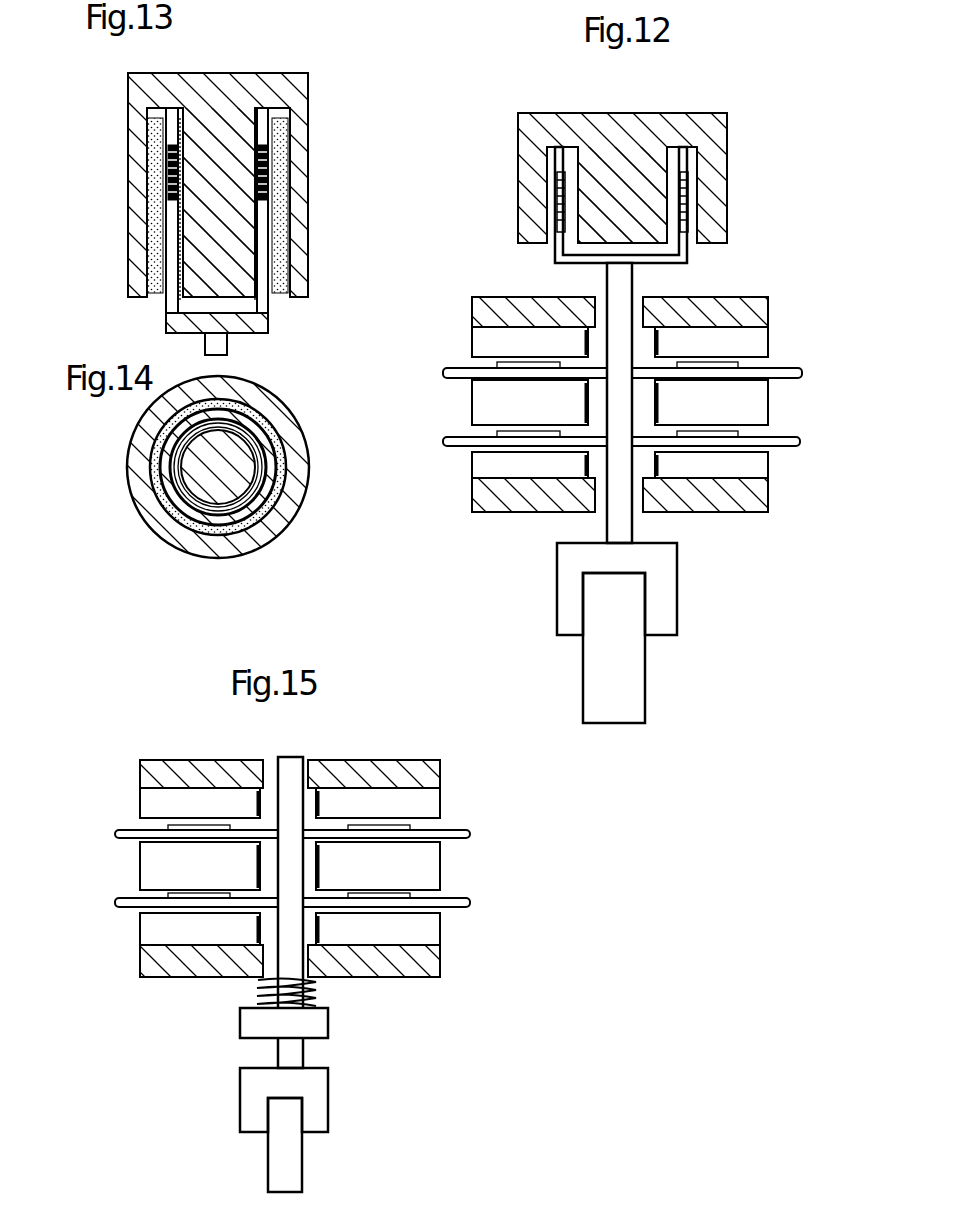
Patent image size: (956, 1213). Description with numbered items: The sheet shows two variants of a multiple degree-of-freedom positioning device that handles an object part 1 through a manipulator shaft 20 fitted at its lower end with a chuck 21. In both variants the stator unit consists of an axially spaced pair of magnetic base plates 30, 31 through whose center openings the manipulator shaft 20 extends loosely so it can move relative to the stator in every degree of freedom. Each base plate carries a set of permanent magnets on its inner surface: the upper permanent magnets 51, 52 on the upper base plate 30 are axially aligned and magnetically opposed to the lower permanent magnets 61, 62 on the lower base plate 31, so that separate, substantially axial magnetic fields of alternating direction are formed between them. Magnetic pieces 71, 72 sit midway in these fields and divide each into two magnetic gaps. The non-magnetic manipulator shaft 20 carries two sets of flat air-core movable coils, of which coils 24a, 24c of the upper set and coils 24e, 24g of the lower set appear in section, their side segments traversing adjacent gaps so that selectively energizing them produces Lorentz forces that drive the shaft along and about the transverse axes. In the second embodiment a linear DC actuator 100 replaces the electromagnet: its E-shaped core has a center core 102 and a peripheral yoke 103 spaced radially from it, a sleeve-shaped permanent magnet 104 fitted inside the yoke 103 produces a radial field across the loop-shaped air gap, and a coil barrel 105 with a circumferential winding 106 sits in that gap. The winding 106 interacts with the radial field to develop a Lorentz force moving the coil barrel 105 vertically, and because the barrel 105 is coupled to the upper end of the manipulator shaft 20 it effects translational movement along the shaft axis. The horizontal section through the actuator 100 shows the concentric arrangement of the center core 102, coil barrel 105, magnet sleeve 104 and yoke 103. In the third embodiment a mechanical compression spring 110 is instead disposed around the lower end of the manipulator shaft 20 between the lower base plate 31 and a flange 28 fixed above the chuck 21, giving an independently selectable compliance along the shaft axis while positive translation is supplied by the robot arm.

In FIG. 12, the object part 1 is at (630, 690).
In FIG. 15, the object part 1 is at (290, 1168).
In FIG. 13, the manipulator shaft 20 is at (227, 346).
In FIG. 12, the manipulator shaft 20 is at (613, 292).
In FIG. 15, the manipulator shaft 20 is at (290, 782).
In FIG. 12, the chuck 21 is at (667, 618).
In FIG. 15, the chuck 21 is at (318, 1107).
In FIG. 12, the movable coil 24a is at (445, 371).
In FIG. 15, the movable coil 24a is at (120, 834).
In FIG. 12, the movable coil 24c is at (828, 359).
In FIG. 15, the movable coil 24c is at (472, 834).
In FIG. 12, the movable coil 24e is at (447, 442).
In FIG. 15, the movable coil 24e is at (122, 904).
In FIG. 12, the movable coil 24g is at (790, 446).
In FIG. 15, the movable coil 24g is at (472, 903).
In FIG. 15, the flange 28 is at (250, 1028).
In FIG. 12, the upper base plate 30 is at (759, 298).
In FIG. 15, the upper base plate 30 is at (440, 765).
In FIG. 12, the lower base plate 31 is at (762, 498).
In FIG. 15, the lower base plate 31 is at (433, 965).
In FIG. 12, the permanent magnet 51 is at (484, 338).
In FIG. 15, the permanent magnet 51 is at (152, 803).
In FIG. 12, the permanent magnet 52 is at (751, 340).
In FIG. 15, the permanent magnet 52 is at (433, 800).
In FIG. 12, the permanent magnet 61 is at (483, 463).
In FIG. 15, the permanent magnet 61 is at (147, 930).
In FIG. 12, the permanent magnet 62 is at (760, 470).
In FIG. 15, the permanent magnet 62 is at (437, 934).
In FIG. 12, the magnetic piece 71 is at (480, 403).
In FIG. 15, the magnetic piece 71 is at (152, 862).
In FIG. 12, the magnetic piece 72 is at (758, 408).
In FIG. 15, the magnetic piece 72 is at (433, 860).
In FIG. 13, the linear DC actuator 100 is at (310, 72).
In FIG. 12, the linear DC actuator 100 is at (730, 112).
In FIG. 13, the center core 102 is at (208, 178).
In FIG. 14, the center core 102 is at (223, 480).
In FIG. 12, the center core 102 is at (610, 200).
In FIG. 13, the peripheral yoke 103 is at (128, 190).
In FIG. 14, the peripheral yoke 103 is at (298, 461).
In FIG. 12, the peripheral yoke 103 is at (528, 195).
In FIG. 13, the permanent magnet sleeve 104 is at (283, 211).
In FIG. 14, the permanent magnet sleeve 104 is at (282, 491).
In FIG. 13, the coil barrel 105 is at (263, 317).
In FIG. 14, the coil barrel 105 is at (170, 497).
In FIG. 12, the coil barrel 105 is at (688, 235).
In FIG. 13, the winding 106 is at (268, 164).
In FIG. 15, the mechanical spring 110 is at (257, 993).